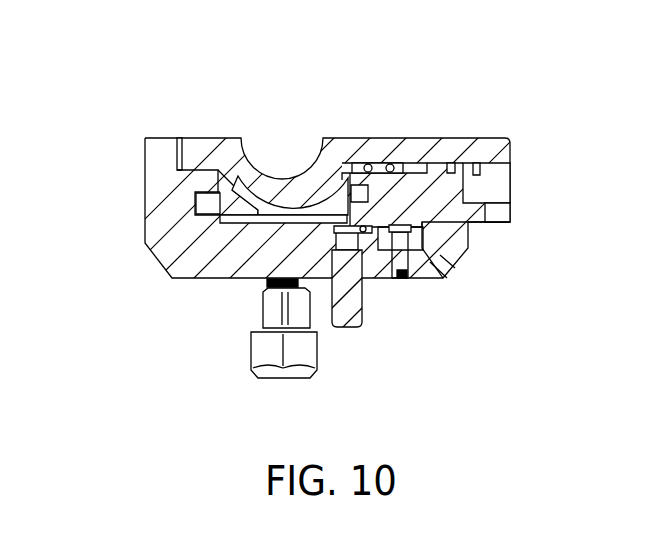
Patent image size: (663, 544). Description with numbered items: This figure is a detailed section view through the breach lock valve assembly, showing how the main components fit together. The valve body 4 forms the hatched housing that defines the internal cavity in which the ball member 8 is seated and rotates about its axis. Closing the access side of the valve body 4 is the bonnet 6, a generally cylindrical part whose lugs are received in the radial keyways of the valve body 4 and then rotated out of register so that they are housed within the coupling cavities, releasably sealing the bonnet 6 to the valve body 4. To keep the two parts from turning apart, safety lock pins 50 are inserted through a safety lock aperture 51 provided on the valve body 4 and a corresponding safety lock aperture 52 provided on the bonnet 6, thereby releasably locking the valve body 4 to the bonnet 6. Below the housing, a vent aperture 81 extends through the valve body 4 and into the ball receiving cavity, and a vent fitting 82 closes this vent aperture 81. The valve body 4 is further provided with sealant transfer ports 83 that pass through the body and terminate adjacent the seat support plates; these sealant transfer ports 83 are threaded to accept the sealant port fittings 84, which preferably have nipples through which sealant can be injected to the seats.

The valve body 4 is at (147, 248).
The bonnet 6 is at (477, 225).
The ball member 8 is at (420, 138).
The safety lock pins 50 is at (413, 278).
The safety lock aperture 51 is at (440, 283).
The safety lock aperture 52 is at (455, 265).
The vent aperture 81 is at (362, 270).
The vent fitting 82 is at (365, 315).
The sealant transfer ports 83 is at (265, 283).
The sealant port fittings 84 is at (250, 348).